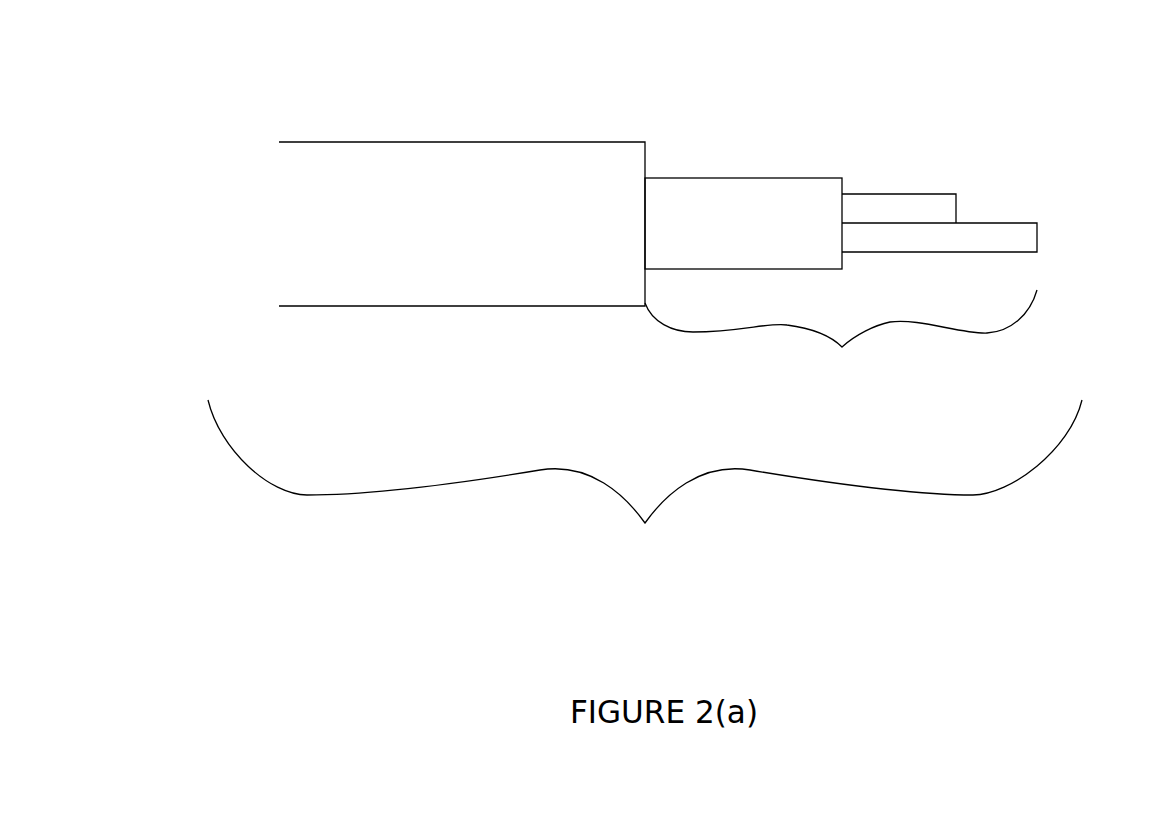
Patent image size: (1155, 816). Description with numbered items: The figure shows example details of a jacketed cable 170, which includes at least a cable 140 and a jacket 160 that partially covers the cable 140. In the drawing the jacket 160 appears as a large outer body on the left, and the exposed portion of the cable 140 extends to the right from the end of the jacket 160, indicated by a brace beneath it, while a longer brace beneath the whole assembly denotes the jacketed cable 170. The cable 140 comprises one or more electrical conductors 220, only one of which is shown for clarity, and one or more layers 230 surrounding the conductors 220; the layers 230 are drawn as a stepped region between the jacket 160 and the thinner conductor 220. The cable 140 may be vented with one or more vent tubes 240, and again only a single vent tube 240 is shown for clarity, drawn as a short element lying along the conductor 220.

The jacket 160 is at (540, 138).
The layers 230 is at (802, 177).
The vent tube 240 is at (940, 193).
The electrical conductor 220 is at (1022, 222).
The cable 140 is at (841, 346).
The jacketed cable 170 is at (645, 490).